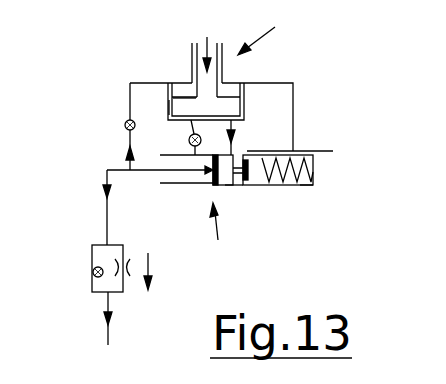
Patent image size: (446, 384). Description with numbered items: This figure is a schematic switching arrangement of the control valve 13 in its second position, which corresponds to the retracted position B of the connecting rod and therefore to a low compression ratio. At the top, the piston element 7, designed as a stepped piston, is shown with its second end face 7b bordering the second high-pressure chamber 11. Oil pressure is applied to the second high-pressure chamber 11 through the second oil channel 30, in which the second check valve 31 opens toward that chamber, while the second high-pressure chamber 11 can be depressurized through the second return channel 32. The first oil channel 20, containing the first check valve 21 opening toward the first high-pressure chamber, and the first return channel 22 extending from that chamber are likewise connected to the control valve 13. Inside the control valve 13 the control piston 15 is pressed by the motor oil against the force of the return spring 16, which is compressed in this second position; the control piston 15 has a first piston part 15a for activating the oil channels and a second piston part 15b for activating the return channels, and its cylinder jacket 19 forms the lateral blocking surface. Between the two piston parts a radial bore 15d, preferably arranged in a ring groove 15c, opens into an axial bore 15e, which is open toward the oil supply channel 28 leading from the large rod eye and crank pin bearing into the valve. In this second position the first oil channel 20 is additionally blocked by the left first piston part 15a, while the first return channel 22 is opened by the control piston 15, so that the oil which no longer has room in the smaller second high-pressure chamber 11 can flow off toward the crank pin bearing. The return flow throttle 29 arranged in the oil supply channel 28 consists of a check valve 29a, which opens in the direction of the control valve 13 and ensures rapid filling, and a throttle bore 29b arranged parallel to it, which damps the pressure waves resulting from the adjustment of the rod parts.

The piston element 7 is at (245, 101).
The second end face 7b is at (178, 97).
The second high-pressure chamber 11 is at (229, 88).
The control valve 13 is at (224, 238).
The control piston 15 is at (260, 185).
The first piston part 15a is at (175, 185).
The second piston part 15b is at (310, 184).
The ring groove 15c is at (310, 150).
The radial bore 15d is at (233, 184).
The axial bore 15e is at (213, 177).
The return spring 16 is at (308, 169).
The cylinder jacket 19 is at (284, 184).
The first oil channel 20 is at (168, 112).
The first check valve 21 is at (189, 141).
The first return channel 22 is at (236, 147).
The oil supply channel 28 is at (110, 340).
The return flow throttle 29 is at (91, 295).
The check valve 29a is at (93, 273).
The throttle bore 29b is at (126, 262).
The second oil channel 30 is at (130, 100).
The second check valve 31 is at (125, 128).
The second return channel 32 is at (295, 86).
The retracted position B is at (266, 30).